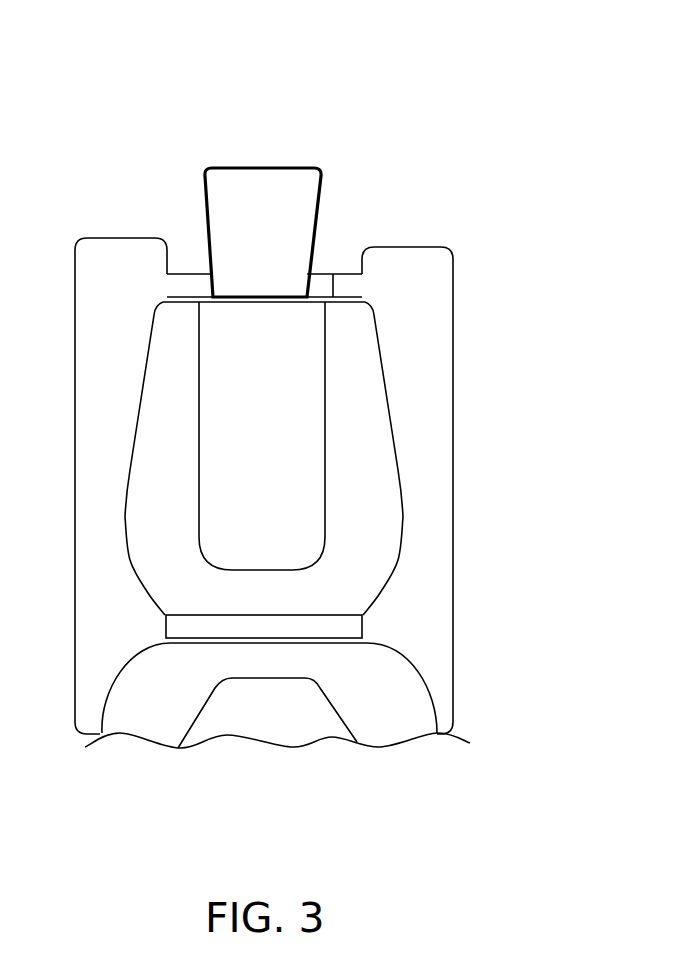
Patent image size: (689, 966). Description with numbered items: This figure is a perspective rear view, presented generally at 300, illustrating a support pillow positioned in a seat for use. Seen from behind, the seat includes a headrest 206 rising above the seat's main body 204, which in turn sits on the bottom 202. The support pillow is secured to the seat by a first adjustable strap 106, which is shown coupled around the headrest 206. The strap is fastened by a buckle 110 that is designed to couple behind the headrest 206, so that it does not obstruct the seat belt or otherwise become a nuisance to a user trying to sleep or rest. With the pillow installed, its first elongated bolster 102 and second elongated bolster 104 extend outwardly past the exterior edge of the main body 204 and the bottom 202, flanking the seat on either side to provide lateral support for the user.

The perspective rear view of support pillow in seat 300 is at (129, 68).
The first elongated bolster 102 is at (110, 237).
The second elongated bolster 104 is at (423, 247).
The first adjustable strap 106 is at (195, 273).
The buckle 110 is at (318, 278).
The headrest 206 is at (262, 168).
The main body 204 is at (307, 422).
The bottom 202 is at (392, 713).